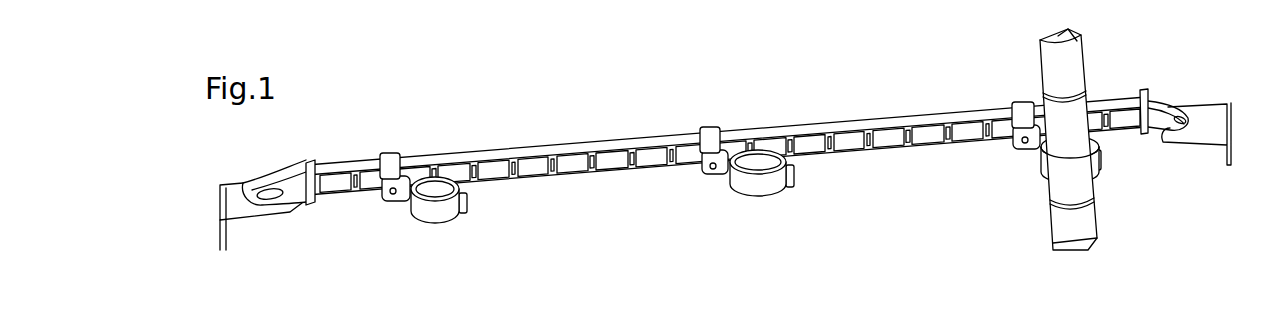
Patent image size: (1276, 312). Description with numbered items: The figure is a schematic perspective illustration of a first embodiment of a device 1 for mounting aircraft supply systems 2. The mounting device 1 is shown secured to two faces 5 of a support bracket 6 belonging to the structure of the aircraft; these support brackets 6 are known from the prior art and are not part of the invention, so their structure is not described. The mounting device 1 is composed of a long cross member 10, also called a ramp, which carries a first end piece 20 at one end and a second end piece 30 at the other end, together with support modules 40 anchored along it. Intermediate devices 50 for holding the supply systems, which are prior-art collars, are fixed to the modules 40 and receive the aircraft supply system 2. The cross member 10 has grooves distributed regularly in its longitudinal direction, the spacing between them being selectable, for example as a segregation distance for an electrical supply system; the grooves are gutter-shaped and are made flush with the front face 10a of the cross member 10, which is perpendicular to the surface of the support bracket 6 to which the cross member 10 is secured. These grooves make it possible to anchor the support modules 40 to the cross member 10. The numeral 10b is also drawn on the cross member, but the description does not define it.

The device for mounting aircraft supply systems 1 is at (185, 217).
The aircraft supply system 2 is at (1070, 70).
The face 5 is at (221, 199).
The support bracket 6 is at (218, 222).
The cross member 10 is at (887, 118).
The front face of the cross member 10a is at (614, 167).
The rail joint 10b is at (552, 177).
The first end piece 20 is at (1198, 110).
The second end piece 30 is at (252, 188).
The support module 40 is at (386, 137).
The intermediate device for holding supply systems 50 is at (765, 222).